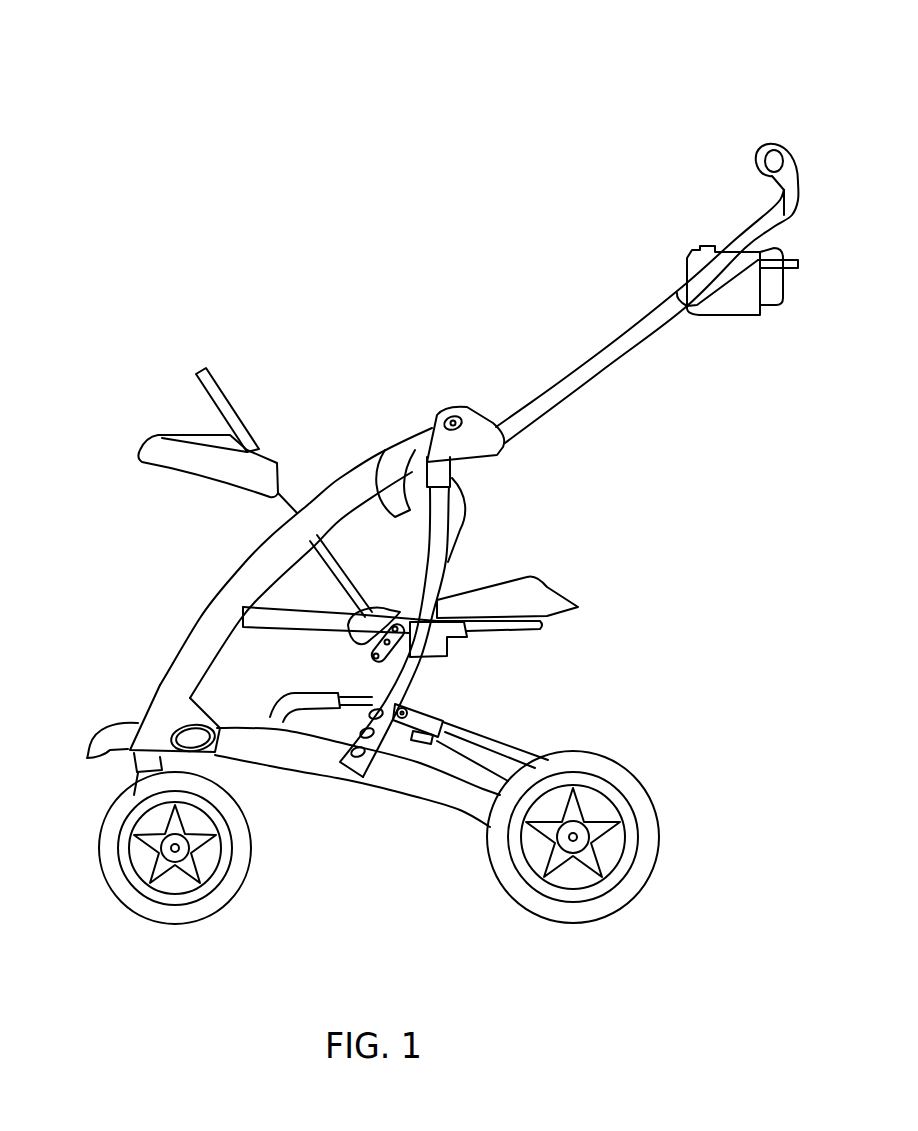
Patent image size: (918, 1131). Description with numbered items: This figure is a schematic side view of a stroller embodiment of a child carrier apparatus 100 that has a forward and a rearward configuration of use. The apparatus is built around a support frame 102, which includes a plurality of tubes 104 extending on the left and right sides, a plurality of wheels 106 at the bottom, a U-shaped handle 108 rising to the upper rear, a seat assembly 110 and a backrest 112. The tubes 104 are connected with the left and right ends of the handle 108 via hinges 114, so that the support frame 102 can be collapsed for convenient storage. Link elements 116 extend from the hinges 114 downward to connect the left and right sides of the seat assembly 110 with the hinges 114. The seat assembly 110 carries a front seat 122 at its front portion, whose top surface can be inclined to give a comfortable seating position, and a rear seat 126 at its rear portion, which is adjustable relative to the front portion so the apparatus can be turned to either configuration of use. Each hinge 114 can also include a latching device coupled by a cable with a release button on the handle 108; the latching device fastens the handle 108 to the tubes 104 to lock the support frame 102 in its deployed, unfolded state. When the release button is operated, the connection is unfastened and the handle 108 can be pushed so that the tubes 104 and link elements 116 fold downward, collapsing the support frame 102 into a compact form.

The child carrier apparatus 100 is at (282, 83).
The support frame 102 is at (140, 518).
The tubes 104 is at (355, 478).
The wheels 106 is at (240, 862).
The U-shaped handle 108 is at (785, 192).
The seat assembly 110 is at (602, 515).
The backrest 112 is at (258, 352).
The hinges 114 is at (481, 420).
The link elements 116 is at (460, 527).
The front seat 122 is at (281, 618).
The rear seat 126 is at (540, 594).